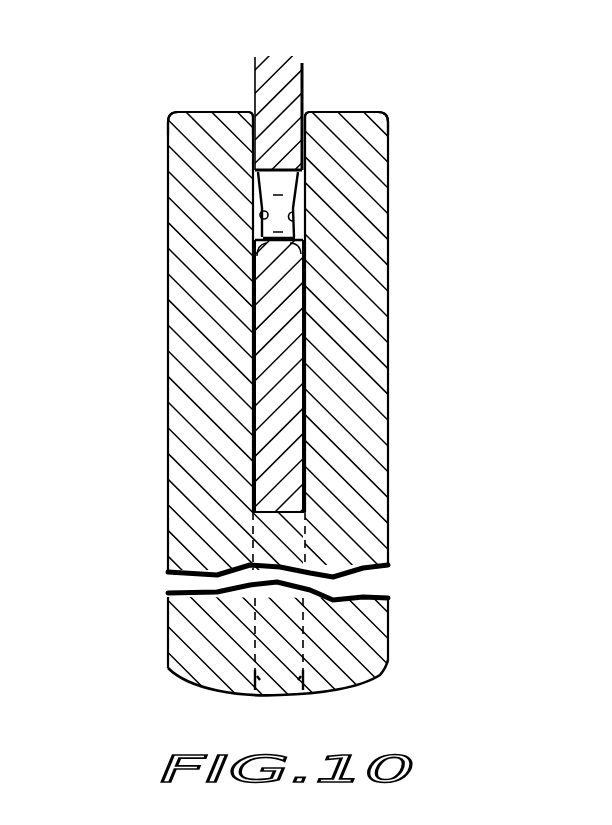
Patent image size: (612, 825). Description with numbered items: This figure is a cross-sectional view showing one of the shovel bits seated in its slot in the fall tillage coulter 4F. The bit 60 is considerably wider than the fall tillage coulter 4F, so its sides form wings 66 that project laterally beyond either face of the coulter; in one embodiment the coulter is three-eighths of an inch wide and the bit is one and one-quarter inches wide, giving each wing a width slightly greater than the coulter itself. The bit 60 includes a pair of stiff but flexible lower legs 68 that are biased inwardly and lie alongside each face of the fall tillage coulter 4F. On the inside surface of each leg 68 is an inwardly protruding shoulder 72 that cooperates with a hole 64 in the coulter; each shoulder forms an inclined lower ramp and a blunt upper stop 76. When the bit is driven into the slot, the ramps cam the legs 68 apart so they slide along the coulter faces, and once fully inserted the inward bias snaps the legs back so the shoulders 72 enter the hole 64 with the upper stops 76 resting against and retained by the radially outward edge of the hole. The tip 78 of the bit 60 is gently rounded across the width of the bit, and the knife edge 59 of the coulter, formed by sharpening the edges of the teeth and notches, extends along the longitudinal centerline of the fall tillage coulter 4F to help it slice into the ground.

The bit 60 is at (391, 371).
The hole 64 is at (281, 175).
The wings 66 is at (205, 520).
The lower legs 68 is at (178, 151).
The shoulder 72 is at (260, 212).
The upper stop 76 is at (300, 242).
The fall tillage coulter 4F is at (289, 333).
The tip 78 is at (383, 689).
The knife edge 59 is at (283, 686).